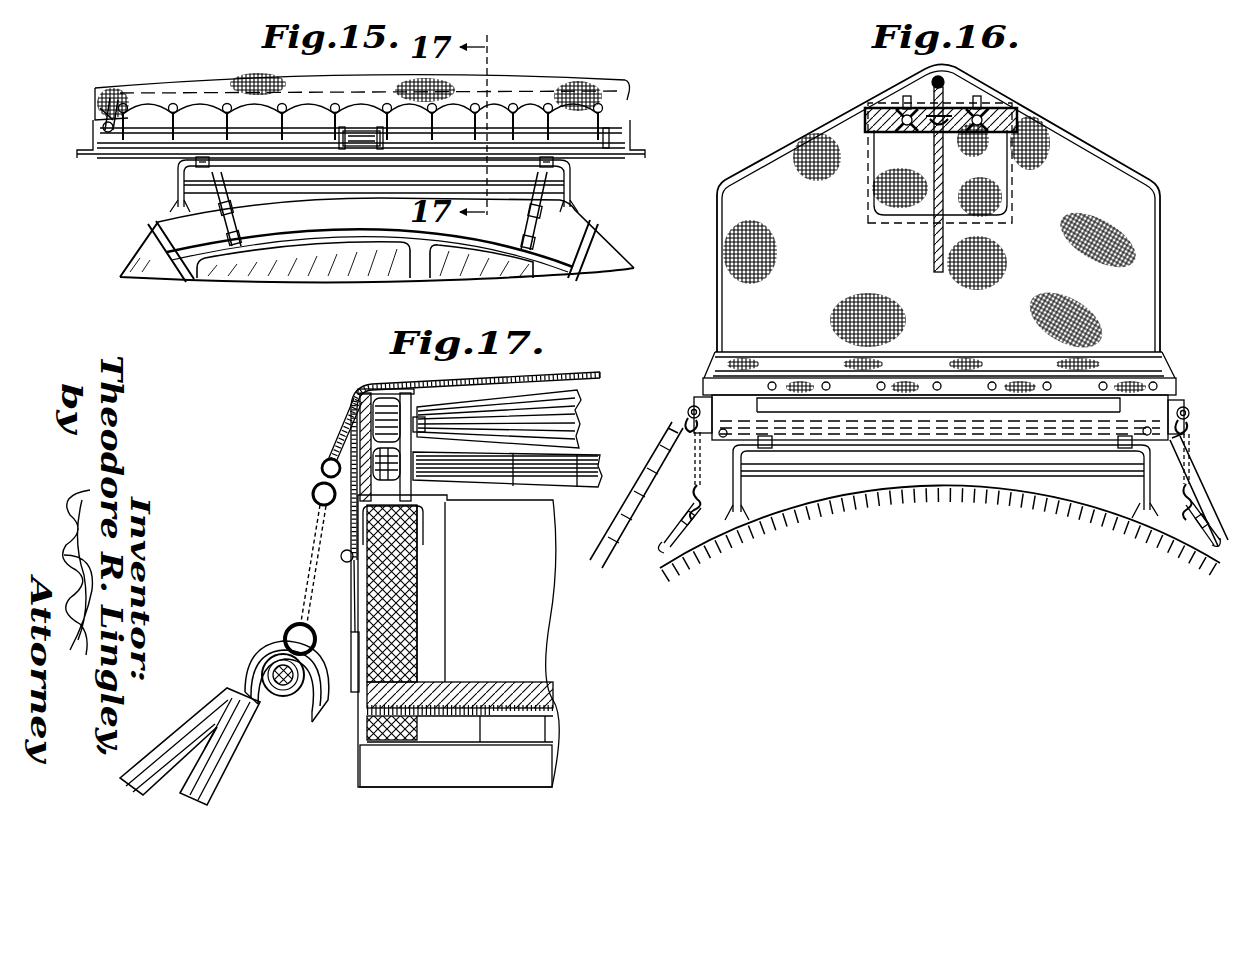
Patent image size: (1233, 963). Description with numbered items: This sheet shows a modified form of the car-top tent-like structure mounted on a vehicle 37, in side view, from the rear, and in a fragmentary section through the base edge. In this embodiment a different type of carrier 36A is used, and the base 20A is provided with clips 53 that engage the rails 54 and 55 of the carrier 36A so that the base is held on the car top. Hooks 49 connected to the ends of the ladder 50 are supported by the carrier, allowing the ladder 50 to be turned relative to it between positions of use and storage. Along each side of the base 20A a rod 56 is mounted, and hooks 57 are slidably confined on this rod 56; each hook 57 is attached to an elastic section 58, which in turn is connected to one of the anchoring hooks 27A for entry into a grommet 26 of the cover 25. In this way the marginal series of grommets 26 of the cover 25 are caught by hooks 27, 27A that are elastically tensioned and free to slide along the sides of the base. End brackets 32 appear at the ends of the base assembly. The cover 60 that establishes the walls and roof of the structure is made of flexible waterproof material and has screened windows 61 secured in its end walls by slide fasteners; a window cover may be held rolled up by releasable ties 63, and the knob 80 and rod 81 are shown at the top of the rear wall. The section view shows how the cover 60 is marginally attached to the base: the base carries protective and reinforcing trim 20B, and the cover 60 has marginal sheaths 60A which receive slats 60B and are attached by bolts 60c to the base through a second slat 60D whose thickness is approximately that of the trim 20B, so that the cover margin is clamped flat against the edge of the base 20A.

In FIG. 15, the base 20A is at (112, 140).
In FIG. 16, the base 20A is at (1137, 408).
In FIG. 17, the base 20A is at (500, 676).
In FIG. 17, the protective and reinforcing trim 20B is at (402, 652).
In FIG. 15, the cover 25 is at (252, 80).
In FIG. 17, the cover 25 is at (585, 375).
In FIG. 15, the grommets 26 is at (337, 103).
In FIG. 17, the grommets 26 is at (333, 456).
In FIG. 16, the hooks 27 is at (690, 503).
In FIG. 16, the anchoring hooks 27A is at (686, 424).
In FIG. 17, the anchoring hooks 27A is at (314, 490).
In FIG. 15, the end bracket 32 is at (86, 148).
In FIG. 15, the carrier 36A is at (325, 170).
In FIG. 16, the carrier 36A is at (889, 462).
In FIG. 15, the vehicle 37 is at (156, 219).
In FIG. 16, the vehicle 37 is at (812, 501).
In FIG. 17, the hooks 49 is at (306, 720).
In FIG. 16, the ladder 50 is at (652, 458).
In FIG. 17, the ladder 50 is at (164, 736).
In FIG. 15, the clips 53 is at (198, 165).
In FIG. 16, the clips 53 is at (760, 456).
In FIG. 15, the rail 54 is at (273, 160).
In FIG. 16, the rail 55 is at (912, 452).
In FIG. 15, the rod 56 is at (160, 135).
In FIG. 16, the rod 56 is at (690, 409).
In FIG. 17, the rod 56 is at (285, 698).
In FIG. 17, the hooks 57 is at (288, 630).
In FIG. 15, the elastic sections 58 is at (232, 120).
In FIG. 16, the elastic sections 58 is at (694, 462).
In FIG. 17, the elastic sections 58 is at (316, 548).
In FIG. 16, the cover 60 is at (815, 127).
In FIG. 17, the cover 60 is at (470, 376).
In FIG. 16, the marginal sheaths 60A is at (729, 183).
In FIG. 17, the marginal sheaths 60A is at (348, 588).
In FIG. 17, the slats 60B is at (345, 572).
In FIG. 16, the bolts 60c is at (935, 383).
In FIG. 17, the bolts 60c is at (340, 556).
In FIG. 17, the second slat 60D is at (425, 560).
In FIG. 16, the screened windows 61 is at (992, 152).
In FIG. 16, the releasable ties 63 is at (903, 106).
In FIG. 16, the knob 80 is at (945, 80).
In FIG. 16, the rod 81 is at (932, 98).